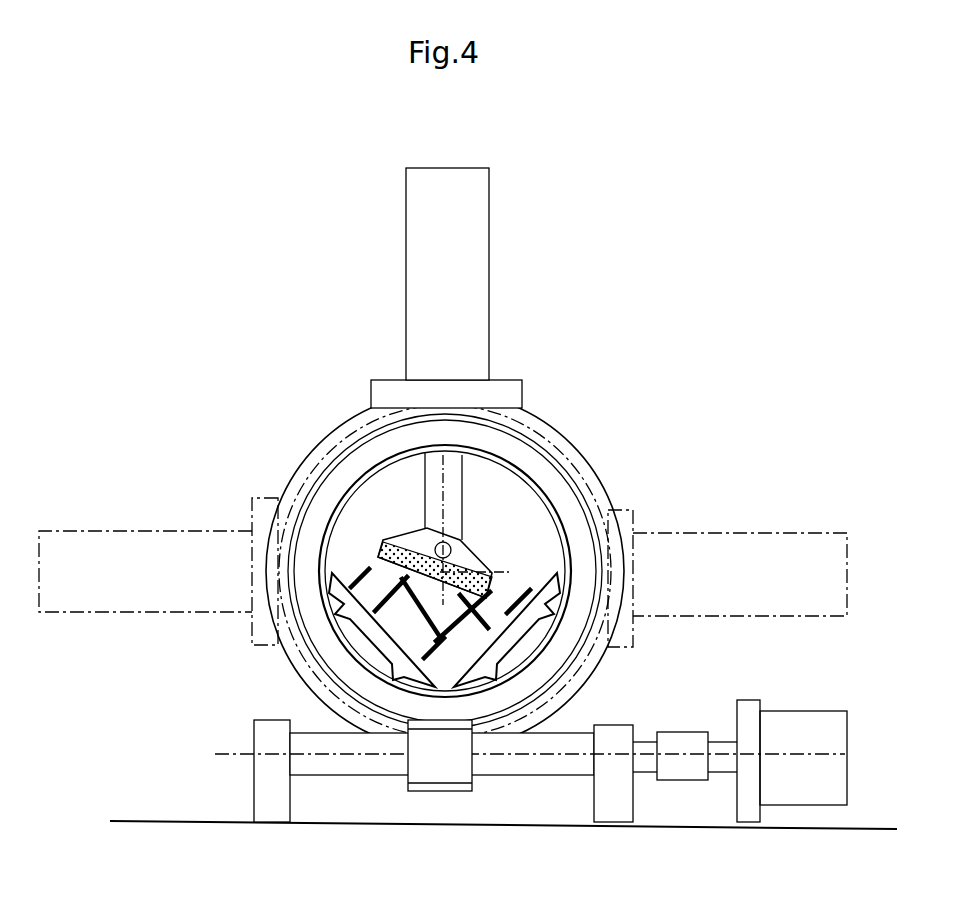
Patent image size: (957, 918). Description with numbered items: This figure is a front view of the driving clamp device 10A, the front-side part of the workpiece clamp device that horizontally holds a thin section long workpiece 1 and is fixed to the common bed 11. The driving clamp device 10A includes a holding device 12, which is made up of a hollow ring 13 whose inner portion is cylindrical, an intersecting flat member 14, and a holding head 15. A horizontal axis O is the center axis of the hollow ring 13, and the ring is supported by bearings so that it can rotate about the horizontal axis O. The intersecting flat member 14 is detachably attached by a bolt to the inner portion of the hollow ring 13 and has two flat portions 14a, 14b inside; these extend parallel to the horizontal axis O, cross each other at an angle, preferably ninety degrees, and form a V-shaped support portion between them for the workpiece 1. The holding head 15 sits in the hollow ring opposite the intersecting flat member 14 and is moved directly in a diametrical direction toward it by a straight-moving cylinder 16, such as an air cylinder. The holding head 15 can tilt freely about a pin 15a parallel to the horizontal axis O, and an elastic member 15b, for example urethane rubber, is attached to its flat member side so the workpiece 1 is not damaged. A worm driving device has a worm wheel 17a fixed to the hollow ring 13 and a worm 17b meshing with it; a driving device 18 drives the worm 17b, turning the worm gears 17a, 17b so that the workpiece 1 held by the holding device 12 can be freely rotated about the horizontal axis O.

The driving clamp device 10A is at (240, 362).
The thin section long workpiece 1 is at (418, 623).
The bed 11 is at (150, 820).
The holding device 12 is at (437, 496).
The hollow ring 13 is at (492, 468).
The intersecting flat member 14 is at (522, 638).
The flat portion 14a is at (345, 569).
The flat portion 14b is at (543, 578).
The holding head 15 is at (445, 544).
The pin 15a is at (438, 545).
The elastic member 15b is at (436, 566).
The straight-moving cylinder 16 is at (418, 255).
The worm wheel 17a is at (328, 497).
The worm 17b is at (453, 768).
The driving device 18 is at (840, 730).
The horizontal axis O is at (392, 540).